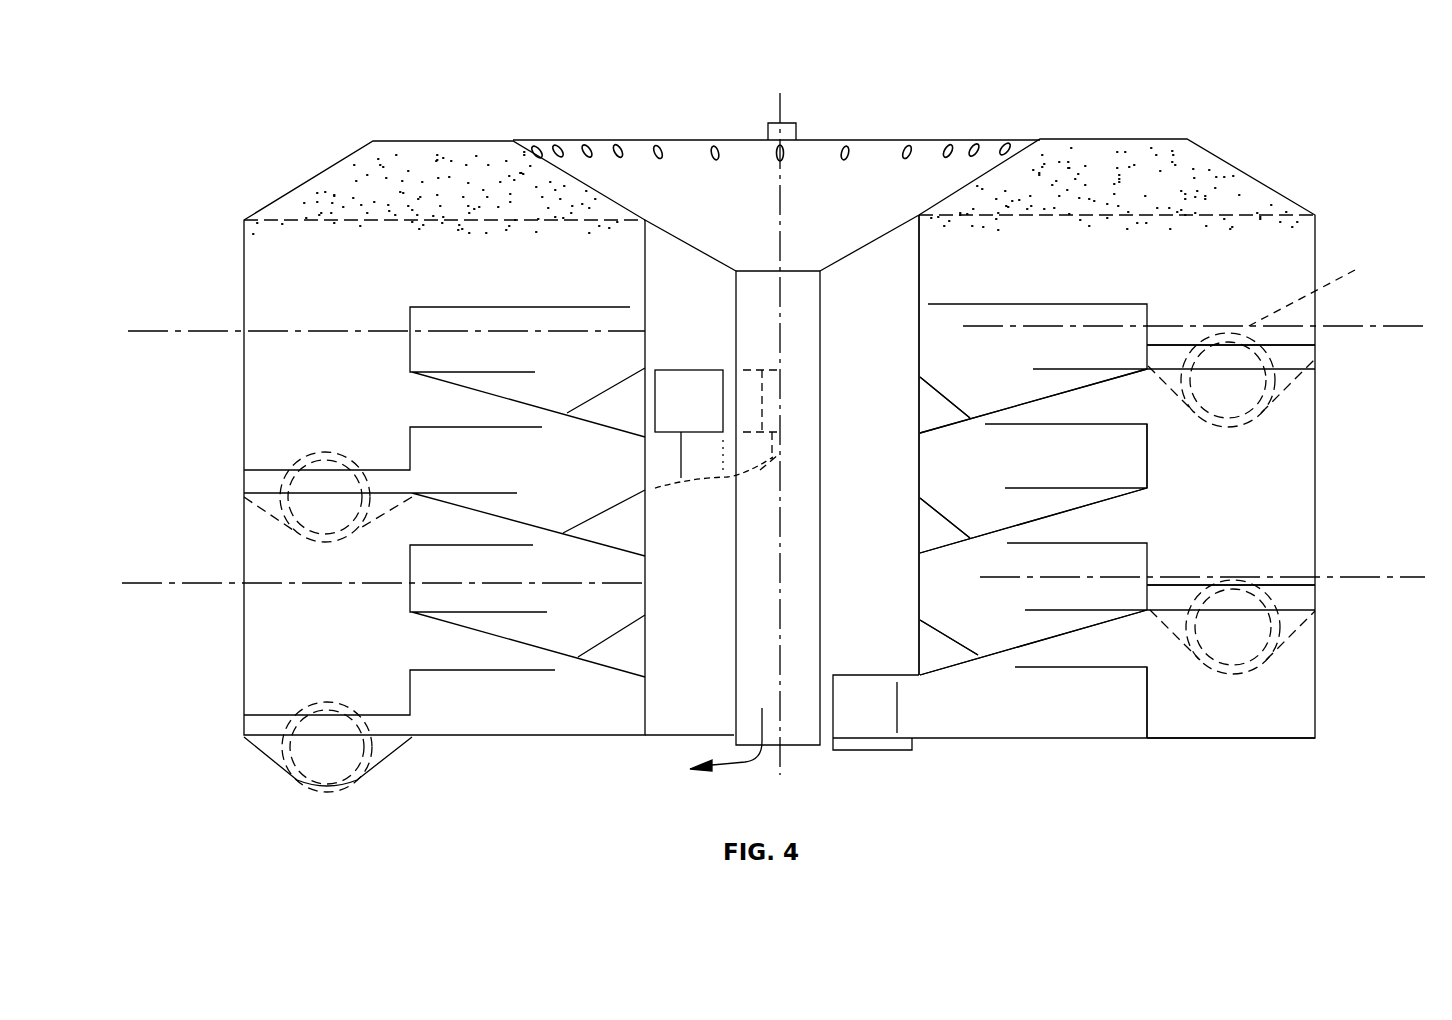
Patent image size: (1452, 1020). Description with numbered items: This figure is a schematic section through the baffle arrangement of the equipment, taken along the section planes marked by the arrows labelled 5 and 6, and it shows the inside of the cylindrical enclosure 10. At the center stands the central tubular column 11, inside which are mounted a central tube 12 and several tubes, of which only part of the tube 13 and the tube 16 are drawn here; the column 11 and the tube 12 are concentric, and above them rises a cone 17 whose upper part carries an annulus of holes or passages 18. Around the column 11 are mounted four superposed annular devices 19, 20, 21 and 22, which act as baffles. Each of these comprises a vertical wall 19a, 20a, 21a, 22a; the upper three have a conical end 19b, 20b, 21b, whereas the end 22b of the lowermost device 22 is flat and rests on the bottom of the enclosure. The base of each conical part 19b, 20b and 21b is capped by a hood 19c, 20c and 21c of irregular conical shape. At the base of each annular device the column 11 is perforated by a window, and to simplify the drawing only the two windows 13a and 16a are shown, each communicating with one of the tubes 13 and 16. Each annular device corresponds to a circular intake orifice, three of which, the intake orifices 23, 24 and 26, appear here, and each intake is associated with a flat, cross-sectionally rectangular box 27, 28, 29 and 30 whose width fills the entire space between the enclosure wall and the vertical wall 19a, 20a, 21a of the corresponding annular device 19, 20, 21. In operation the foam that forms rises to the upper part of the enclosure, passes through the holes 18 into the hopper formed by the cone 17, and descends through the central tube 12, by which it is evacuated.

The section line 5- 5 is at (140, 318).
The section line 6- 6 is at (137, 570).
The cylindrical enclosure 10 is at (1315, 231).
The central tubular column 11 is at (919, 284).
The central tube 12 is at (828, 340).
The tube 13 is at (678, 452).
The window 13a is at (677, 378).
The tube 16 is at (898, 712).
The window 16a is at (887, 720).
The cone 17 is at (605, 139).
The holes 18 is at (1030, 141).
The annular device 19 is at (1055, 303).
The vertical wall 19a is at (1160, 302).
The conical end 19b is at (1015, 405).
The hood 19c is at (948, 408).
The annular device 20 is at (1090, 440).
The vertical wall 20a is at (1147, 472).
The conical end 20b is at (1017, 518).
The hood 20c is at (955, 523).
The annular device 21 is at (1078, 560).
The vertical wall 21a is at (1147, 565).
The conical end 21b is at (1025, 655).
The hood 21c is at (965, 655).
The annular device 22 is at (1065, 690).
The vertical wall 22a is at (1147, 714).
The flat end 22b is at (1068, 738).
The intake orifice 23 is at (1312, 287).
The intake orifice 24 is at (307, 553).
The intake orifice 26 is at (292, 784).
The box 27 is at (1315, 363).
The box 28 is at (244, 483).
The box 29 is at (1315, 599).
The box 30 is at (244, 725).